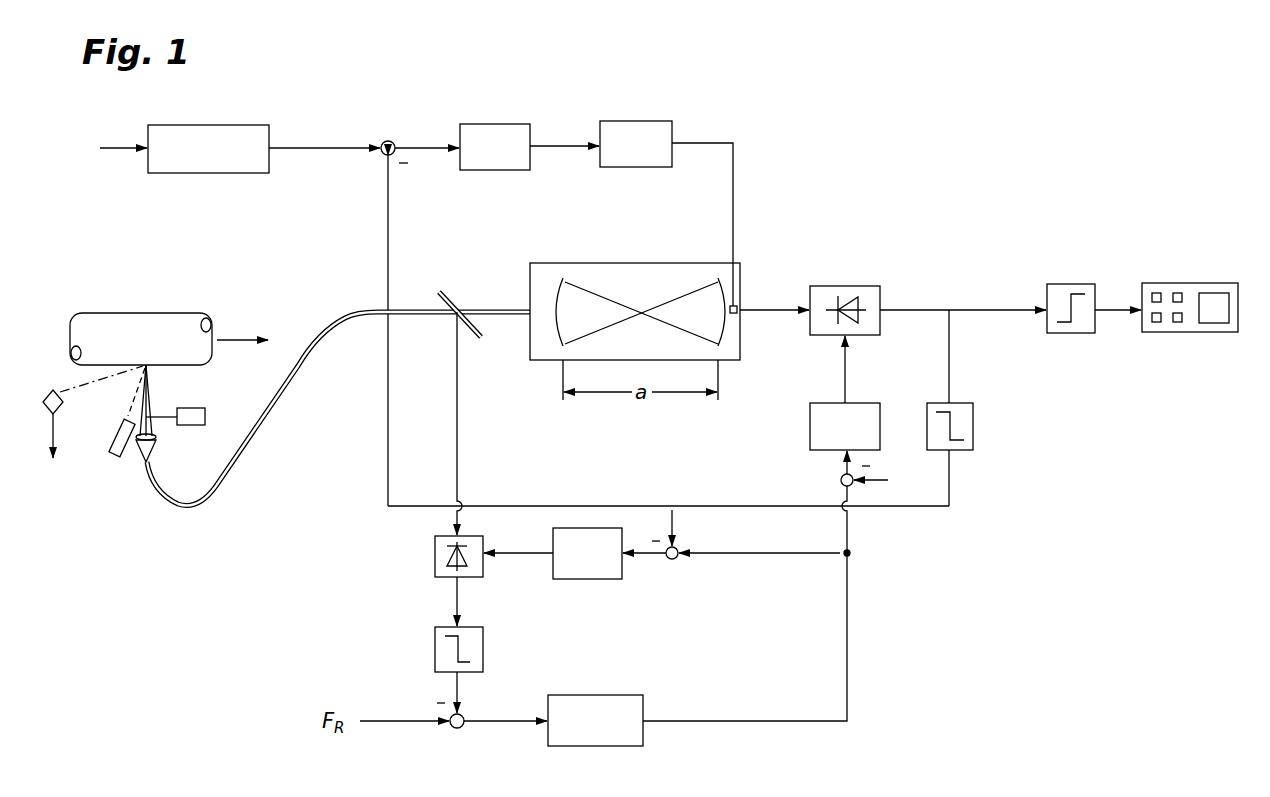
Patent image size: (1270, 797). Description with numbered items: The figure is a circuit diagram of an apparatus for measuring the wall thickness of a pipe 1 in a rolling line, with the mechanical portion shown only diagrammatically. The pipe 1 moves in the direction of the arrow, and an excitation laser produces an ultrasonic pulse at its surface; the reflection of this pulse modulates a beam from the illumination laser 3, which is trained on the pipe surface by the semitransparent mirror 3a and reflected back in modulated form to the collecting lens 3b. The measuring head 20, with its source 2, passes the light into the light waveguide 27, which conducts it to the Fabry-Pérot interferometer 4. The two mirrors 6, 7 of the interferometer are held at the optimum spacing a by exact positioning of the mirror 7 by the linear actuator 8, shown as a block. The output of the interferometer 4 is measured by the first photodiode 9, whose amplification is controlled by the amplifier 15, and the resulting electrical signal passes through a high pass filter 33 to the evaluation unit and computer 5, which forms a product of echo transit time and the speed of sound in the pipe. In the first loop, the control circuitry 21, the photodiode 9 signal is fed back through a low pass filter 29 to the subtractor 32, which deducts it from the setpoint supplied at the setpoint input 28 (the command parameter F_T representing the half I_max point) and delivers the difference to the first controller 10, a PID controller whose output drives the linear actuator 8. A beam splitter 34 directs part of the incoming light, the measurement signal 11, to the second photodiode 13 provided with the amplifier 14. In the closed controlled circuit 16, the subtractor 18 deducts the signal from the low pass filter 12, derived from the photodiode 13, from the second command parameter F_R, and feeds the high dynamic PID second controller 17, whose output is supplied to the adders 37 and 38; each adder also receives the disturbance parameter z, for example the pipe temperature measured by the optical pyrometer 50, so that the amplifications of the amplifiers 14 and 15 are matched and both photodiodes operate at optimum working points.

The pipe 1 is at (150, 313).
The illumination source 2 is at (115, 432).
The illumination laser 3 is at (195, 408).
The semitransparent mirror 3a is at (150, 425).
The collecting lens 3b is at (143, 450).
The Fabry-Pérot interferometer 4 is at (640, 272).
The evaluation unit and computer 5 is at (1190, 283).
The mirror 6 is at (553, 290).
The mirror 7 is at (724, 280).
The linear actuator 8 is at (643, 121).
The first photodiode 9 is at (852, 286).
The first controller 10 is at (495, 124).
The signal 11 is at (453, 396).
The low pass filter 12 is at (435, 658).
The second photodiode 13 is at (437, 570).
The amplifier 14 is at (575, 579).
The amplifier 15 is at (868, 403).
The closed controlled circuit 16 is at (626, 644).
The second controller 17 is at (598, 740).
The subtractor 18 is at (457, 729).
The measuring head 20 is at (214, 472).
The control circuitry 21 is at (492, 211).
The light waveguide 27 is at (246, 470).
The setpoint input 28 is at (221, 125).
The low pass filter 29 is at (968, 403).
The subtractor 32 is at (392, 141).
The high pass filter 33 is at (1066, 284).
The beam splitter 34 is at (457, 300).
The adder 37 is at (670, 562).
The adder 38 is at (840, 478).
The optical pyrometer 50 is at (91, 425).